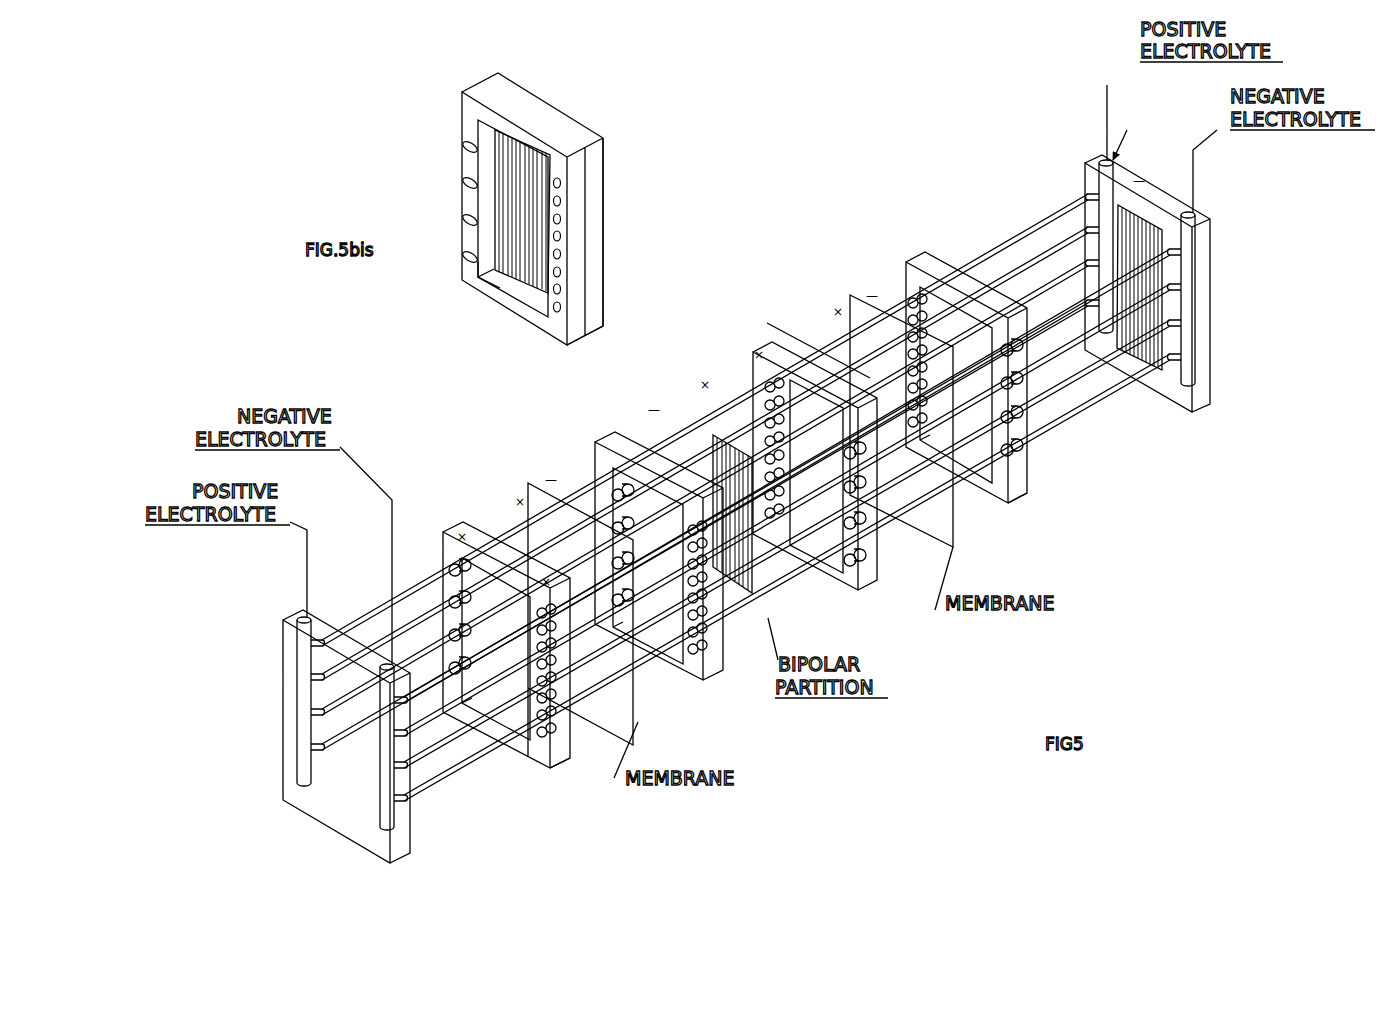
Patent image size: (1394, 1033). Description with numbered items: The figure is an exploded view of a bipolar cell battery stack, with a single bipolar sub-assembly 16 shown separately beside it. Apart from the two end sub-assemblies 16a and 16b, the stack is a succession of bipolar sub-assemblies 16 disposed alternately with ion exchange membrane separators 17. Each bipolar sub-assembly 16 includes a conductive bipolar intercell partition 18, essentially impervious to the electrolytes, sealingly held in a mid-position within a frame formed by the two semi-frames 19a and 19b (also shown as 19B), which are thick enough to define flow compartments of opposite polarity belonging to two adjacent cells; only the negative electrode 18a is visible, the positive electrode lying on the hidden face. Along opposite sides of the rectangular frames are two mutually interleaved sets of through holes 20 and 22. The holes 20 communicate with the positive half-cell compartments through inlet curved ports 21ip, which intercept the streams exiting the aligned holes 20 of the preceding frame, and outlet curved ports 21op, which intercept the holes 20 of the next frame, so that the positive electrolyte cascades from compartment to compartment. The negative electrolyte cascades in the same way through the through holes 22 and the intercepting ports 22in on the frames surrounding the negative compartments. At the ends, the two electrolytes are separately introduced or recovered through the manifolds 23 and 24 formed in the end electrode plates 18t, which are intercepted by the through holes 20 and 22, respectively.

In FIG. 5bis, the bipolar sub-assembly 16 is at (588, 330).
In FIG. 5, the end sub-assembly 16a is at (937, 260).
In FIG. 5, the end sub-assembly 16b is at (465, 523).
In FIG. 5, the ion exchange membrane separator 17 is at (633, 708).
In FIG. 5bis, the conductive bipolar intercell partition 18 is at (538, 108).
In FIG. 5, the conductive bipolar intercell partition 18 is at (795, 615).
In FIG. 5bis, the negative electrode 18a is at (493, 270).
In FIG. 5, the negative electrode 18a is at (1138, 363).
In FIG. 5, the end electrode plate 18t is at (397, 860).
In FIG. 5bis, the frame body 19a is at (552, 335).
In FIG. 5, the frame body 19a is at (1020, 507).
In FIG. 5bis, the frame body 19b is at (610, 194).
In FIG. 5, the frame body 19b is at (512, 762).
In FIG. 5, the frame body 19B is at (872, 612).
In FIG. 5, the through holes 20 is at (365, 675).
In FIG. 5, the inlet curved ports 21ip is at (453, 668).
In FIG. 5, the outlet curved ports 21op is at (767, 323).
In FIG. 5, the through holes 22 is at (540, 612).
In FIG. 5, the inlet curved ports 22in is at (612, 448).
In FIG. 5, the positive electrolyte manifold 23 is at (290, 762).
In FIG. 5, the negative electrolyte manifold 24 is at (372, 812).